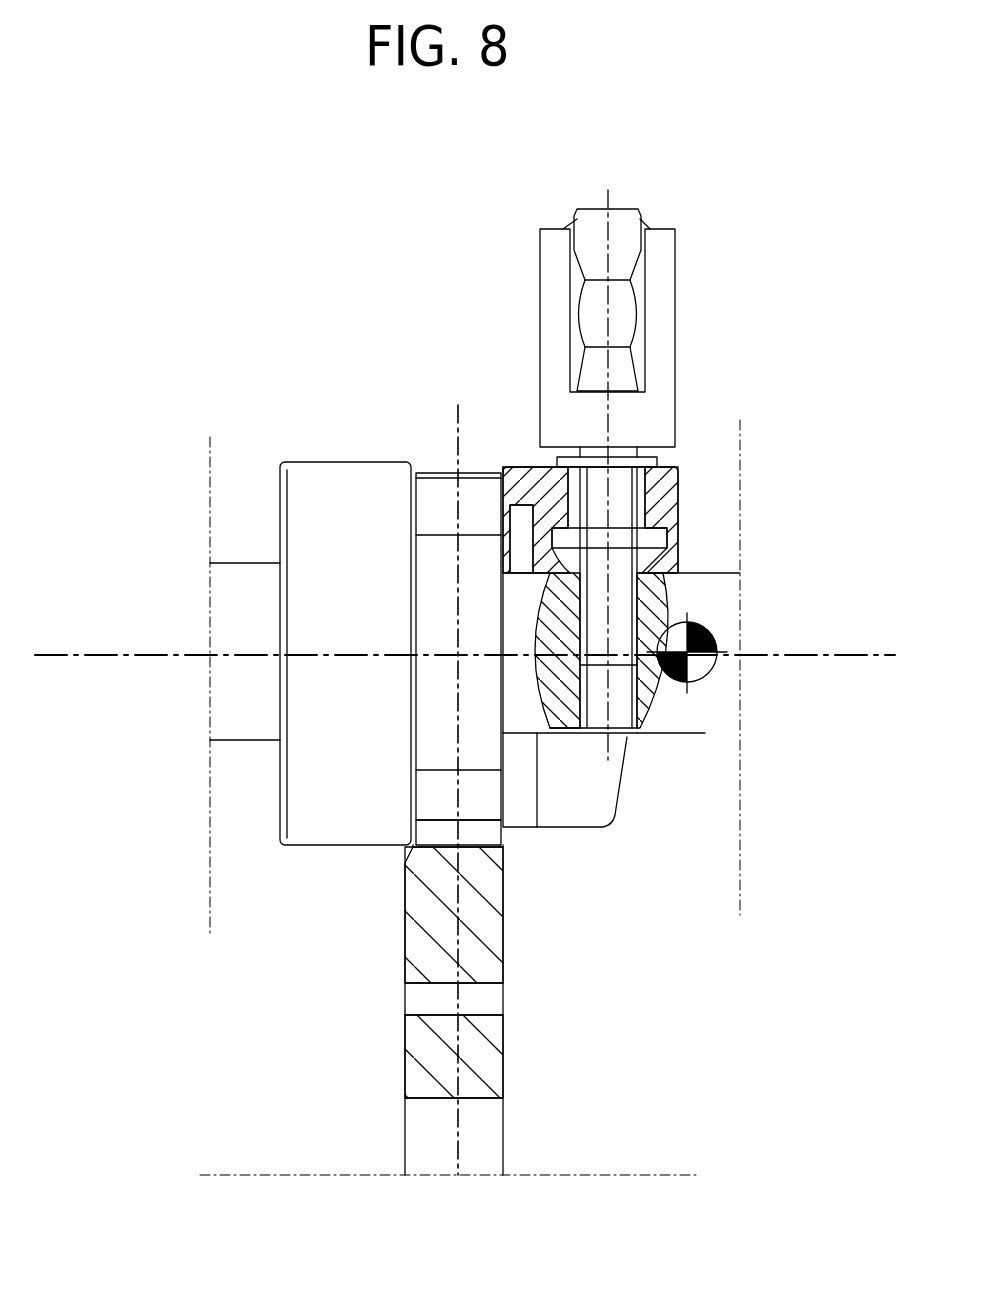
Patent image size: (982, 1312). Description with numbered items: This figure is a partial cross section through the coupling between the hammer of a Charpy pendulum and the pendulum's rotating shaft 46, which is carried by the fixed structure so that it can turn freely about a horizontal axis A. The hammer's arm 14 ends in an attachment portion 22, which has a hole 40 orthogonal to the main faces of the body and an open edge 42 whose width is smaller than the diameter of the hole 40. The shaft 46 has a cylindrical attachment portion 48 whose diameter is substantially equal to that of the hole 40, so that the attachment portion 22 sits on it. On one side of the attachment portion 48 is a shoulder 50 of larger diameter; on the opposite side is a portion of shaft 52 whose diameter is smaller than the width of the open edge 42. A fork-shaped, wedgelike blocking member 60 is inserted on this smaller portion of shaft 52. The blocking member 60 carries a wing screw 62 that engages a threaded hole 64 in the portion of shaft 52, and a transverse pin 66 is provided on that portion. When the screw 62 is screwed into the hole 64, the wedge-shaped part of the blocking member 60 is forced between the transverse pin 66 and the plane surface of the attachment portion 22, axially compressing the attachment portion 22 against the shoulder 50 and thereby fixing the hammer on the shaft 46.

The arm 14 is at (518, 1138).
The attachment portion 22 is at (523, 840).
The hole 40 is at (445, 750).
The open edge 42 is at (440, 497).
The rotating shaft 46 is at (752, 610).
The attachment portion of the shaft 48 is at (432, 597).
The shoulder 50 is at (317, 487).
The portion of shaft 52 is at (705, 588).
The blocking member 60 is at (700, 342).
The wing screw 62 is at (596, 498).
The threaded hole 64 is at (592, 697).
The transverse pin 66 is at (700, 668).
The horizontal axis A is at (137, 655).